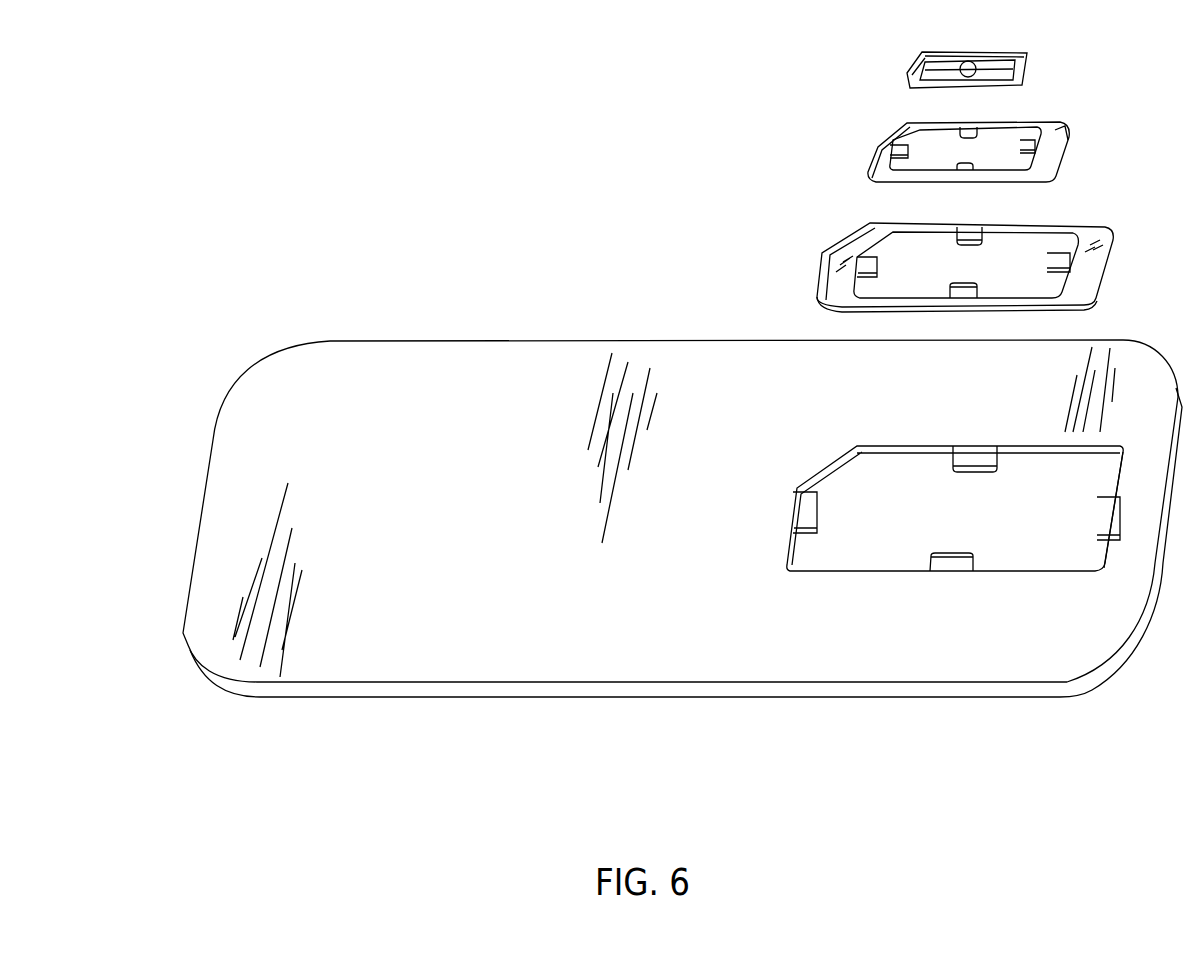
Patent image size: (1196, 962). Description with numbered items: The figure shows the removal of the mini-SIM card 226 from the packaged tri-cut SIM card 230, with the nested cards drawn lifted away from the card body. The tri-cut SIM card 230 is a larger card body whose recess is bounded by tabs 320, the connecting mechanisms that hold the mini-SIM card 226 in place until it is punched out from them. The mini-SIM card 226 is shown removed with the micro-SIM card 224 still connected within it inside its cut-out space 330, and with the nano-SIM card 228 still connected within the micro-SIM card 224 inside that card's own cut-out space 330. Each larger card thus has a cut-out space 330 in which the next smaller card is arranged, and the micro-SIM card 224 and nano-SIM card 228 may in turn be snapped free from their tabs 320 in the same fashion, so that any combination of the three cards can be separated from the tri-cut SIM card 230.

The tri-cut SIM card 230 is at (725, 362).
The tabs 320 is at (798, 497).
The mini-SIM card 226 is at (822, 260).
The micro-SIM card 224 is at (880, 152).
The nano-SIM card 228 is at (916, 66).
The cut-out space 330 is at (983, 147).